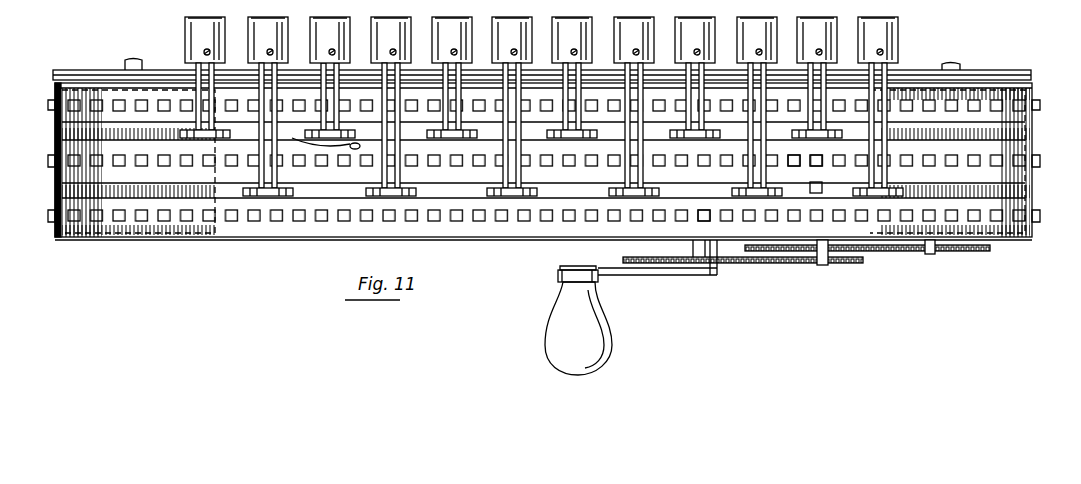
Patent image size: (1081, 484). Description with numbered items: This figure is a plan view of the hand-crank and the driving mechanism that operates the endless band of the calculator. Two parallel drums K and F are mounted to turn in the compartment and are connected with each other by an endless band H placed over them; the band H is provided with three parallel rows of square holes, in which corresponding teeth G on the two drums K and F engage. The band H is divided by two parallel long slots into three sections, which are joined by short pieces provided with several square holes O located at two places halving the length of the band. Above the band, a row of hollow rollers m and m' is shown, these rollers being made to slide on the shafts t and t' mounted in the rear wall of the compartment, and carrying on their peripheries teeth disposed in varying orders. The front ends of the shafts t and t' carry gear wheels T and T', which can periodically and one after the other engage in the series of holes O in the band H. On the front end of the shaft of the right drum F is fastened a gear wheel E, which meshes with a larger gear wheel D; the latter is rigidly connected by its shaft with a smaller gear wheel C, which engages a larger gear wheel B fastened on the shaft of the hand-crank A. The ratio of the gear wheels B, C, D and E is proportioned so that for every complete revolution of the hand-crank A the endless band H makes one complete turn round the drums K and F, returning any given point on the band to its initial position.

The roller m is at (188, 39).
The roller m' is at (256, 32).
The shaft t is at (213, 92).
The shaft t' is at (310, 121).
The gear wheel T is at (215, 147).
The gear wheel T' is at (268, 225).
The drum K is at (57, 133).
The drum F is at (1030, 136).
The teeth G is at (1040, 106).
The endless band H is at (1032, 82).
The perforation I is at (545, 221).
The perforation L is at (818, 170).
The square holes O is at (328, 150).
The hand-crank A is at (548, 328).
The gear wheel B is at (734, 257).
The gear wheel C is at (818, 262).
The gear wheel D is at (860, 251).
The gear wheel E is at (930, 252).